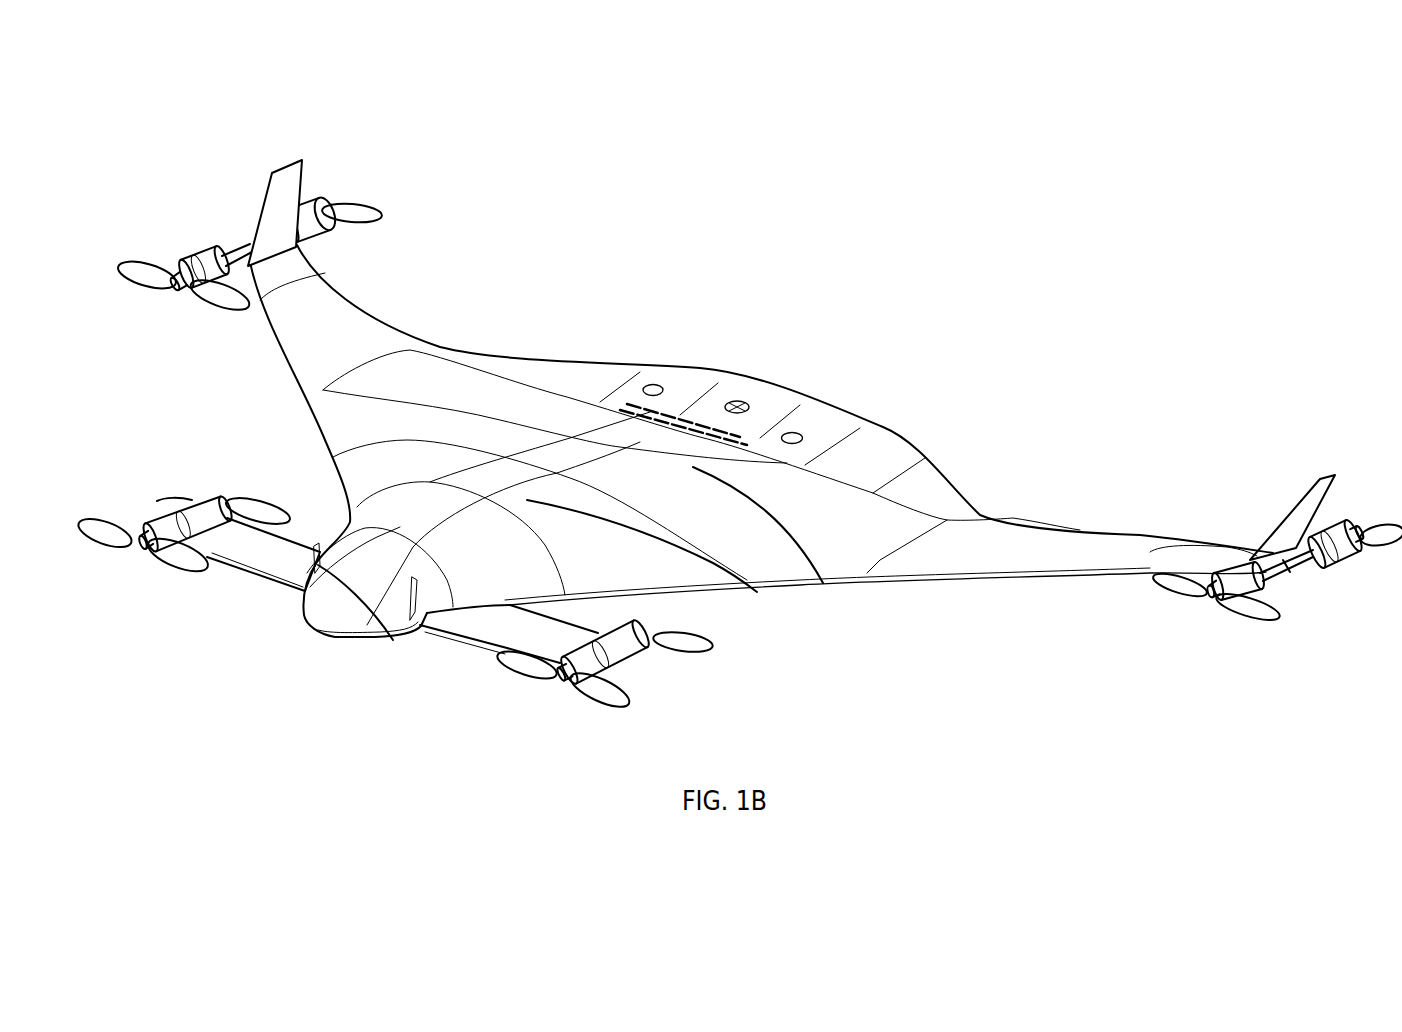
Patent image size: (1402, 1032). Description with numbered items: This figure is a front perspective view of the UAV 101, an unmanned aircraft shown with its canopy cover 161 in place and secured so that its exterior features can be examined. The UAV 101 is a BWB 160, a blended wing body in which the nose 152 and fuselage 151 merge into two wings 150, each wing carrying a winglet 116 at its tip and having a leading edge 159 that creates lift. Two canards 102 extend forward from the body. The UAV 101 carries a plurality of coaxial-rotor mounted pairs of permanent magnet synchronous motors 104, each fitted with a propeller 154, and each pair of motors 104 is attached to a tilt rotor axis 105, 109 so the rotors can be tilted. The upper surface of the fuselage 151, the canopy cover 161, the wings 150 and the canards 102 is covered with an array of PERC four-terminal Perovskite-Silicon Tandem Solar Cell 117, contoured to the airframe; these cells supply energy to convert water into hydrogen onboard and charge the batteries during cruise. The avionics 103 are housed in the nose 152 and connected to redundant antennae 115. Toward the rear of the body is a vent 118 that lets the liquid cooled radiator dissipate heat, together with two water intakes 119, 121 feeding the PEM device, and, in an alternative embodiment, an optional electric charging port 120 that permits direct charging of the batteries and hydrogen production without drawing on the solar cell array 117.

The UAV 101 is at (130, 367).
The canards 102 is at (273, 583).
The avionics 103 is at (327, 637).
The permanent magnet synchronous motors 104 is at (155, 523).
The tilt rotor axis 105 is at (630, 670).
The tilt rotor axis 109 is at (1290, 567).
The redundant antennae 115 is at (396, 622).
The winglets 116 is at (303, 162).
The Perovskite-Silicon Tandem Solar Cell 117 is at (560, 450).
The vent 118 is at (677, 423).
The water intake 119 is at (655, 383).
The electric charging port 120 is at (747, 400).
The water intake 121 is at (797, 431).
The wings 150 is at (383, 377).
The fuselage 151 is at (757, 592).
The nose 152 is at (343, 613).
The propeller 154 is at (143, 270).
The leading edge 159 is at (318, 430).
The BWB 160 is at (487, 480).
The canopy cover 161 is at (823, 583).